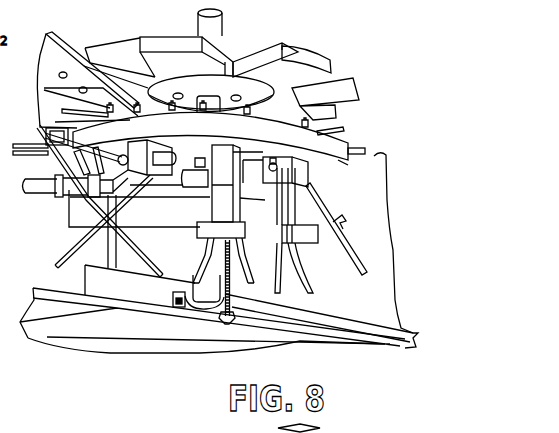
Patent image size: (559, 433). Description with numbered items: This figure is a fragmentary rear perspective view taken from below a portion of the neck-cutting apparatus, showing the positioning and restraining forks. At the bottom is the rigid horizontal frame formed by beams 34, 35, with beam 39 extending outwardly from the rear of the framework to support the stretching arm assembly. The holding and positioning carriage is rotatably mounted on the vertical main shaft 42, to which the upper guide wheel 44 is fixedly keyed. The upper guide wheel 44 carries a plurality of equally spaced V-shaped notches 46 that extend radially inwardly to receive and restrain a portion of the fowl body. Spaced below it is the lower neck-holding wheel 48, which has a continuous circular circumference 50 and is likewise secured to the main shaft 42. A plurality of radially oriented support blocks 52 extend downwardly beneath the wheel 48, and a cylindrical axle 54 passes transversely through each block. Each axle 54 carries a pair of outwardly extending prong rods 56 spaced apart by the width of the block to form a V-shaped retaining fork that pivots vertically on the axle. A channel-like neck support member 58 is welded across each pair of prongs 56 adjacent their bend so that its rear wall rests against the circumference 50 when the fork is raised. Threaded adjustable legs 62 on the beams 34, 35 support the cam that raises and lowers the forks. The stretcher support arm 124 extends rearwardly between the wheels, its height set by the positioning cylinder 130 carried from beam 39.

The beam 34 is at (317, 313).
The beam 35 is at (183, 335).
The beam 39 is at (100, 337).
The main shaft 42 is at (203, 287).
The upper guide wheel 44 is at (312, 57).
The V-shaped notches 46 is at (110, 56).
The lower neck-holding wheel 48 is at (343, 142).
The circular circumference 50 is at (351, 146).
The support blocks 52 is at (140, 163).
The axle 54 is at (273, 163).
The prong rods 56 is at (98, 246).
The neck support member 58 is at (213, 230).
The adjustable legs 62 is at (240, 308).
The stretcher support arm 124 is at (120, 100).
The positioning cylinder 130 is at (64, 204).